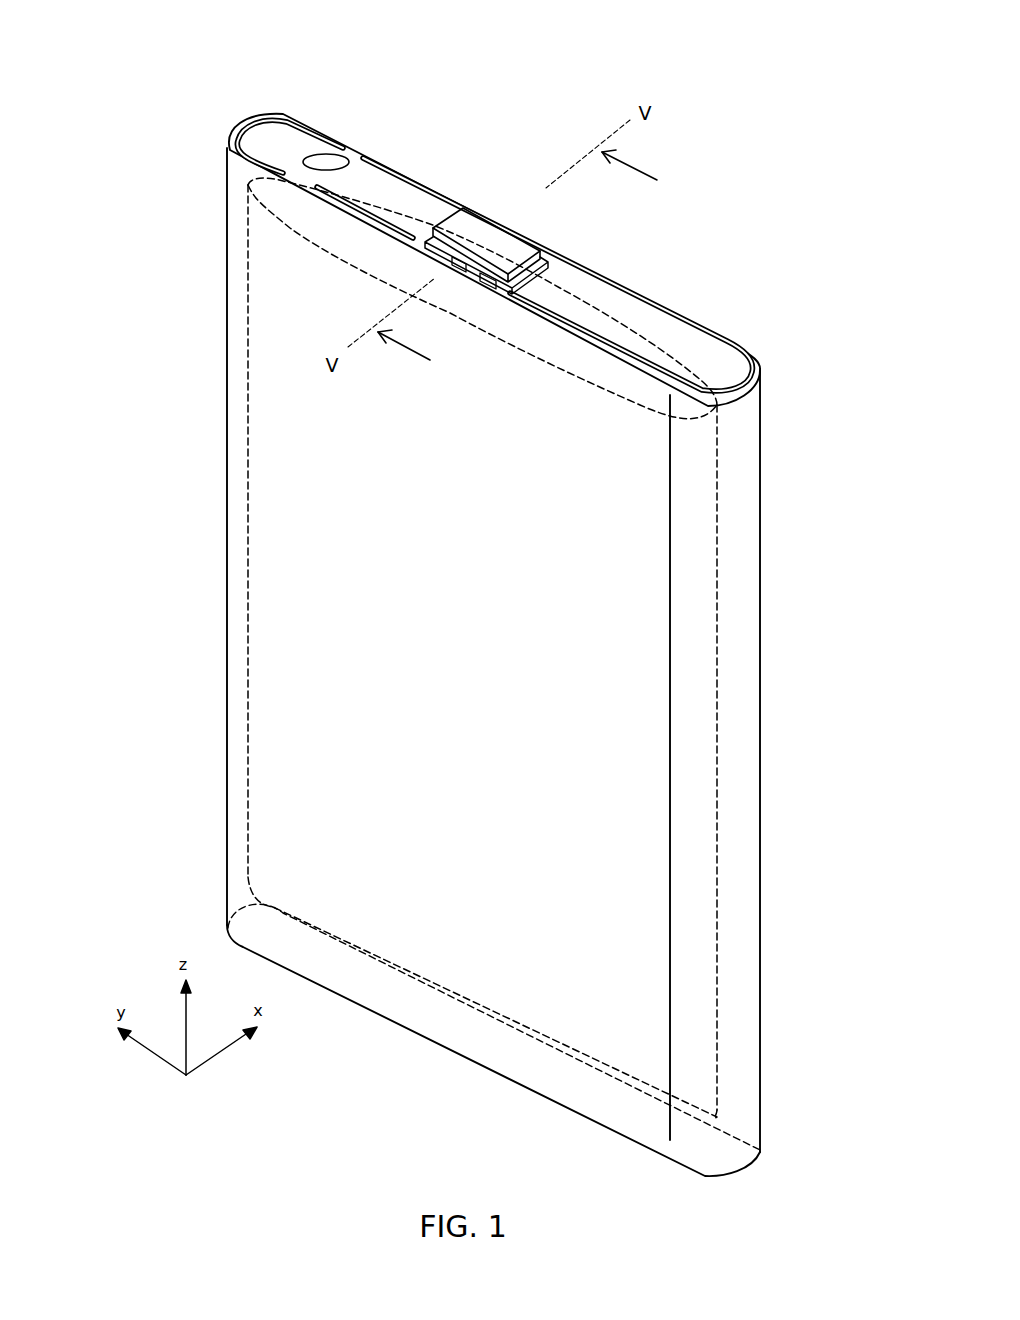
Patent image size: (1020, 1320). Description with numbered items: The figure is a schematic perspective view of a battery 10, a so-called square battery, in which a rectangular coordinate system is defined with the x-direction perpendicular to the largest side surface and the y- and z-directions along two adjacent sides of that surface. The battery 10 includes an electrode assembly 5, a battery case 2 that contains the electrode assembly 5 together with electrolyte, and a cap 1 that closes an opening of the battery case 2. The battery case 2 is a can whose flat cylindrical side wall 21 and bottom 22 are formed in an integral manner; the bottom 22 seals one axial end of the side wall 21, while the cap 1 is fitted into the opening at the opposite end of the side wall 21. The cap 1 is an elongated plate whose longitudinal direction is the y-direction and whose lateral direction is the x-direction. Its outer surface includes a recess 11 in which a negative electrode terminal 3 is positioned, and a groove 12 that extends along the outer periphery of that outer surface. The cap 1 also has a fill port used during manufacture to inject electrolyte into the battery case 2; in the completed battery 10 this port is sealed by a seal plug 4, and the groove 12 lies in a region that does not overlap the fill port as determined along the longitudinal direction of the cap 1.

The cap 1 is at (500, 203).
The battery case 2 is at (439, 662).
The negative electrode terminal 3 is at (517, 250).
The seal plug 4 is at (329, 154).
The electrode assembly 5 is at (248, 538).
The battery 10 is at (434, 588).
The recess 11 is at (488, 270).
The groove 12 is at (297, 122).
The side wall 21 is at (278, 707).
The bottom 22 is at (243, 947).